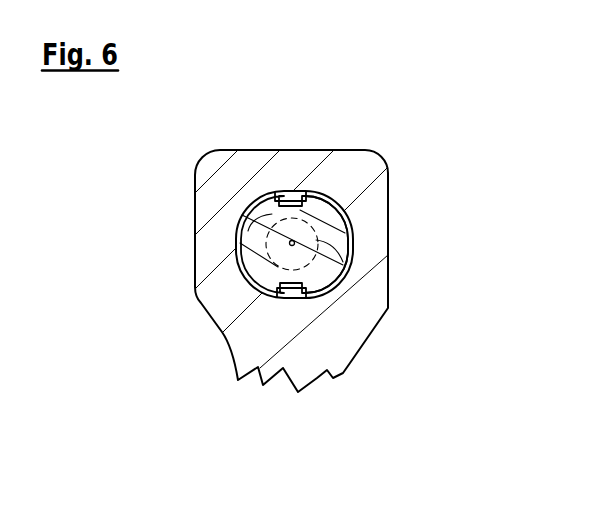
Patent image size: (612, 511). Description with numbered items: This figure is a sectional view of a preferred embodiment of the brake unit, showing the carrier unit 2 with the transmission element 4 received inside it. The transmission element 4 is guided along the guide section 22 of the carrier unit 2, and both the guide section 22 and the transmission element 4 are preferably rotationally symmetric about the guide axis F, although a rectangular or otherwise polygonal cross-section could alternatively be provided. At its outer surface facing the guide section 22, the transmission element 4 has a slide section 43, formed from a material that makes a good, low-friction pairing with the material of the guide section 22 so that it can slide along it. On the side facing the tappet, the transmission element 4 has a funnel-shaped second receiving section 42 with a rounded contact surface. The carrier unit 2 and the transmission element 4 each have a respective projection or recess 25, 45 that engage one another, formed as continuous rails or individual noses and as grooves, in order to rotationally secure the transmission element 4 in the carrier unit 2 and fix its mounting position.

The carrier unit 2 is at (217, 243).
The transmission element 4 is at (236, 216).
The guide section 22 is at (346, 201).
The slide section 43 is at (355, 232).
The second receiving section 42 is at (352, 264).
The projection or recess 25 is at (300, 288).
The projection or recess 45 is at (278, 293).
The guide axis F is at (292, 241).